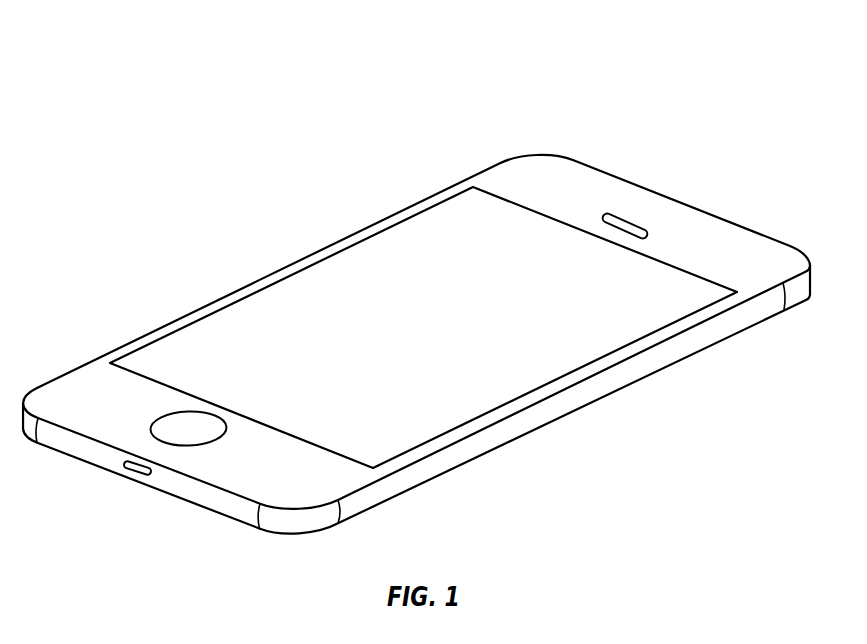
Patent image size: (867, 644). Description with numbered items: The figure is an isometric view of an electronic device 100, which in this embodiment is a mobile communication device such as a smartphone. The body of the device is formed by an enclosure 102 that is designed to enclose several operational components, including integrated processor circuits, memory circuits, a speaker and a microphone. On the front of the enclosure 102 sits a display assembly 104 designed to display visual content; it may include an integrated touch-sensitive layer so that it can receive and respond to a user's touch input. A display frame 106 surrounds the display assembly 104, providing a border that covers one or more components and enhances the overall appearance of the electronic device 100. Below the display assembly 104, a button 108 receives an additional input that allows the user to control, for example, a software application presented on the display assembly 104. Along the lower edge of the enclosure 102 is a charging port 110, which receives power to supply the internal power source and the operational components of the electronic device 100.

The electronic device 100 is at (128, 100).
The enclosure 102 is at (706, 378).
The display assembly 104 is at (432, 336).
The display frame 106 is at (738, 244).
The button 108 is at (160, 415).
The charging port 110 is at (134, 476).